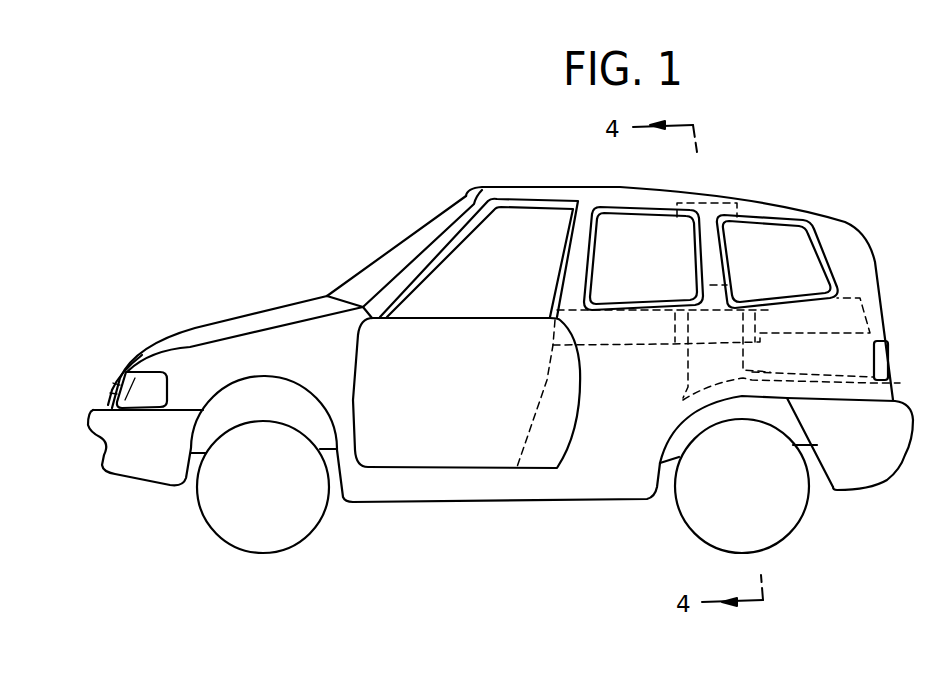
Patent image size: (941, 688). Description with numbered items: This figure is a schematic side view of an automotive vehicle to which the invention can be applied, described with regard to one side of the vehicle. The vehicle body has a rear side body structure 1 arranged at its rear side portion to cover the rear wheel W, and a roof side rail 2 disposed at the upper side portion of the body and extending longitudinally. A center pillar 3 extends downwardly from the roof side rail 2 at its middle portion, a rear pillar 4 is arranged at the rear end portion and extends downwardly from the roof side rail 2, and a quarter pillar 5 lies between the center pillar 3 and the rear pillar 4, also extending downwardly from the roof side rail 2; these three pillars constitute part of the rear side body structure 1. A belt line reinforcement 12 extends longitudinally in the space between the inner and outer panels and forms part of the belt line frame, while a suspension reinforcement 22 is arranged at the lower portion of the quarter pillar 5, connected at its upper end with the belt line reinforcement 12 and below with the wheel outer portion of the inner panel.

The rear side body structure 1 is at (890, 320).
The roof side rail 2 is at (665, 203).
The center pillar 3 is at (582, 216).
The rear pillar 4 is at (835, 230).
The quarter pillar 5 is at (709, 230).
The belt line reinforcement 12 is at (641, 347).
The suspension reinforcement 22 is at (900, 383).
The rear wheel W is at (807, 508).